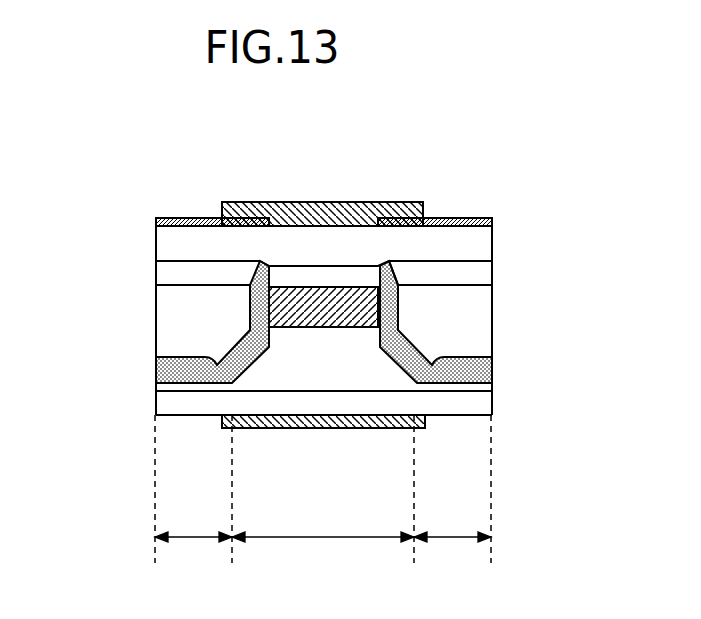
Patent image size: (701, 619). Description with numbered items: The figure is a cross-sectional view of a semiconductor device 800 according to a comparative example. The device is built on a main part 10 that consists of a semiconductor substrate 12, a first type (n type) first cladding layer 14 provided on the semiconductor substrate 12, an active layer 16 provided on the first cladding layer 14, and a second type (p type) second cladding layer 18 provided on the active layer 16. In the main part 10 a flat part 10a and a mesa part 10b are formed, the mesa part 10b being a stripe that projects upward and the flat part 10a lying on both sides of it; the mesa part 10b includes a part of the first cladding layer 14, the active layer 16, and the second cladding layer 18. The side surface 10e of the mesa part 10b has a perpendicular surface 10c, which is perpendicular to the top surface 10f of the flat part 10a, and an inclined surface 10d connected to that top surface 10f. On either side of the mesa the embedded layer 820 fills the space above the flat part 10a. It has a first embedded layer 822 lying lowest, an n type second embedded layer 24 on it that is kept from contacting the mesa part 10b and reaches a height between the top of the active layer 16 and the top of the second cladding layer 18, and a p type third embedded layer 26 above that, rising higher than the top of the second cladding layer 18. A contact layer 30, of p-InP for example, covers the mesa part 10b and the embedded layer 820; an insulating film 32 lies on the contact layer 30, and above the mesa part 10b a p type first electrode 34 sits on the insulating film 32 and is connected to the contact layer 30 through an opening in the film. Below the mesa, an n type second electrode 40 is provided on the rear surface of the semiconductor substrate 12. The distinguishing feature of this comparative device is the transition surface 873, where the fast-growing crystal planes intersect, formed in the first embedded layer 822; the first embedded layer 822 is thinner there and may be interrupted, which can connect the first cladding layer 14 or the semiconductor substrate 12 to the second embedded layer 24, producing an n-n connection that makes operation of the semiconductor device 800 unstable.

The semiconductor device 800 is at (47, 125).
The insulating film 32 is at (173, 218).
The first electrode 34 is at (298, 220).
The contact layer 30 is at (163, 243).
The third embedded layer 26 is at (163, 273).
The second embedded layer 24 is at (163, 327).
The first embedded layer 822 is at (73, 275).
The embedded layer 820 is at (249, 322).
The transition surface 873 is at (431, 365).
The main part 10 is at (324, 394).
The flat part 10a is at (190, 540).
The mesa part 10b is at (322, 540).
The perpendicular surface 10c is at (402, 288).
The inclined surface 10d is at (408, 288).
The side surface 10e is at (383, 137).
The top surface 10f is at (460, 382).
The semiconductor substrate 12 is at (395, 470).
The first cladding layer 14 is at (300, 367).
The active layer 16 is at (318, 312).
The second cladding layer 18 is at (360, 278).
The second electrode 40 is at (425, 428).